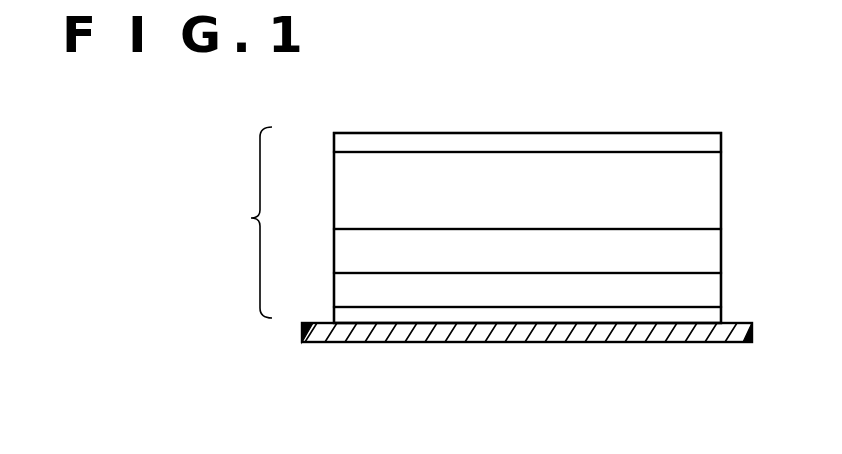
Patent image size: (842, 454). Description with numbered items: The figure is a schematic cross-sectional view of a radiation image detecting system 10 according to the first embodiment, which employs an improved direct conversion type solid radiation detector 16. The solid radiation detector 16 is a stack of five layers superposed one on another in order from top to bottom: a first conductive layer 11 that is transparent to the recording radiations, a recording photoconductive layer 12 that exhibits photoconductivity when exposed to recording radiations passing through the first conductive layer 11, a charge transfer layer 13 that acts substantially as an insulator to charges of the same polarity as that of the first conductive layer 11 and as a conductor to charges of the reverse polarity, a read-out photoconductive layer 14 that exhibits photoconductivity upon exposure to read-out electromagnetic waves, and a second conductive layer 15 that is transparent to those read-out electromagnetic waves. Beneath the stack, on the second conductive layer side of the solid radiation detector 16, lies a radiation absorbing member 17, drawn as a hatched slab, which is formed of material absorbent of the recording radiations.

The radiation image detecting system 10 is at (252, 148).
The first conductive layer 11 is at (334, 142).
The recording photoconductive layer 12 is at (336, 179).
The charge transfer layer 13 is at (336, 253).
The read-out photoconductive layer 14 is at (336, 283).
The second conductive layer 15 is at (336, 312).
The direct conversion type solid radiation detector 16 is at (235, 222).
The radiation absorbing member 17 is at (396, 333).